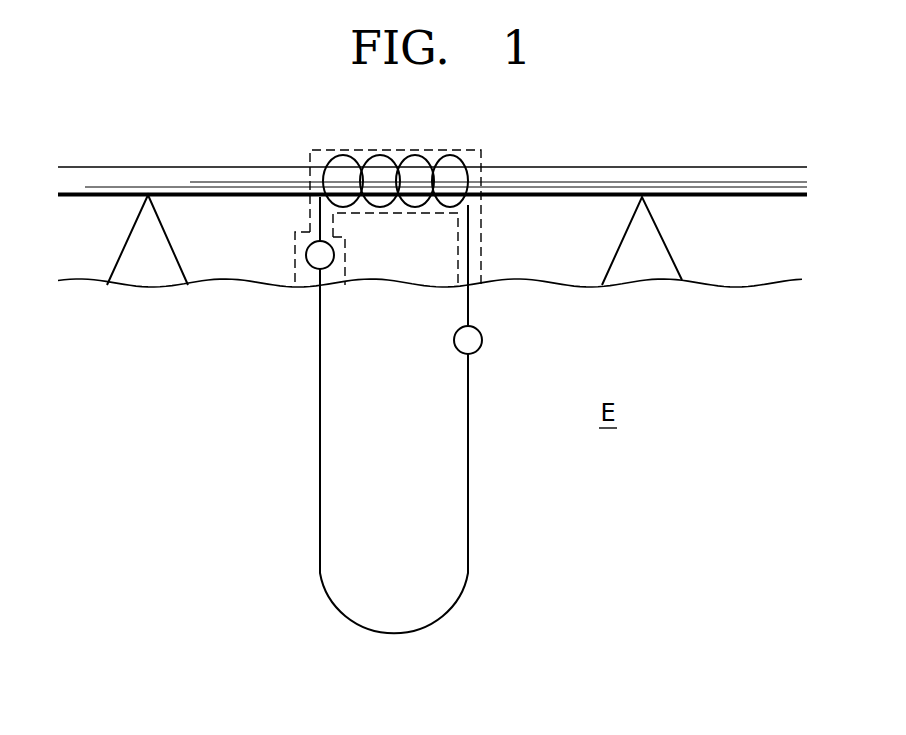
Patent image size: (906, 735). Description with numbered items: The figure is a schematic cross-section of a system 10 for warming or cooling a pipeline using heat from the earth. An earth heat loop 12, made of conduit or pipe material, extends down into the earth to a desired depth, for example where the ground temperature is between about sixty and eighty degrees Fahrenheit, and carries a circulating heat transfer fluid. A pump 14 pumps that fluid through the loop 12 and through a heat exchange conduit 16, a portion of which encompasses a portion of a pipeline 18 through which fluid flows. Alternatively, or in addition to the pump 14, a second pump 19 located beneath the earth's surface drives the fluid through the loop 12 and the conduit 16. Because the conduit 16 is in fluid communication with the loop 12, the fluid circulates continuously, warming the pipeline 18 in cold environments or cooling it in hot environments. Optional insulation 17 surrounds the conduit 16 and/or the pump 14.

The system 10 is at (504, 146).
The earth heat loop 12 is at (318, 498).
The pump 14 is at (307, 255).
The conduit 16 is at (470, 246).
The insulation 17 is at (311, 217).
The pipeline 18 is at (360, 177).
The pump 19 is at (483, 341).